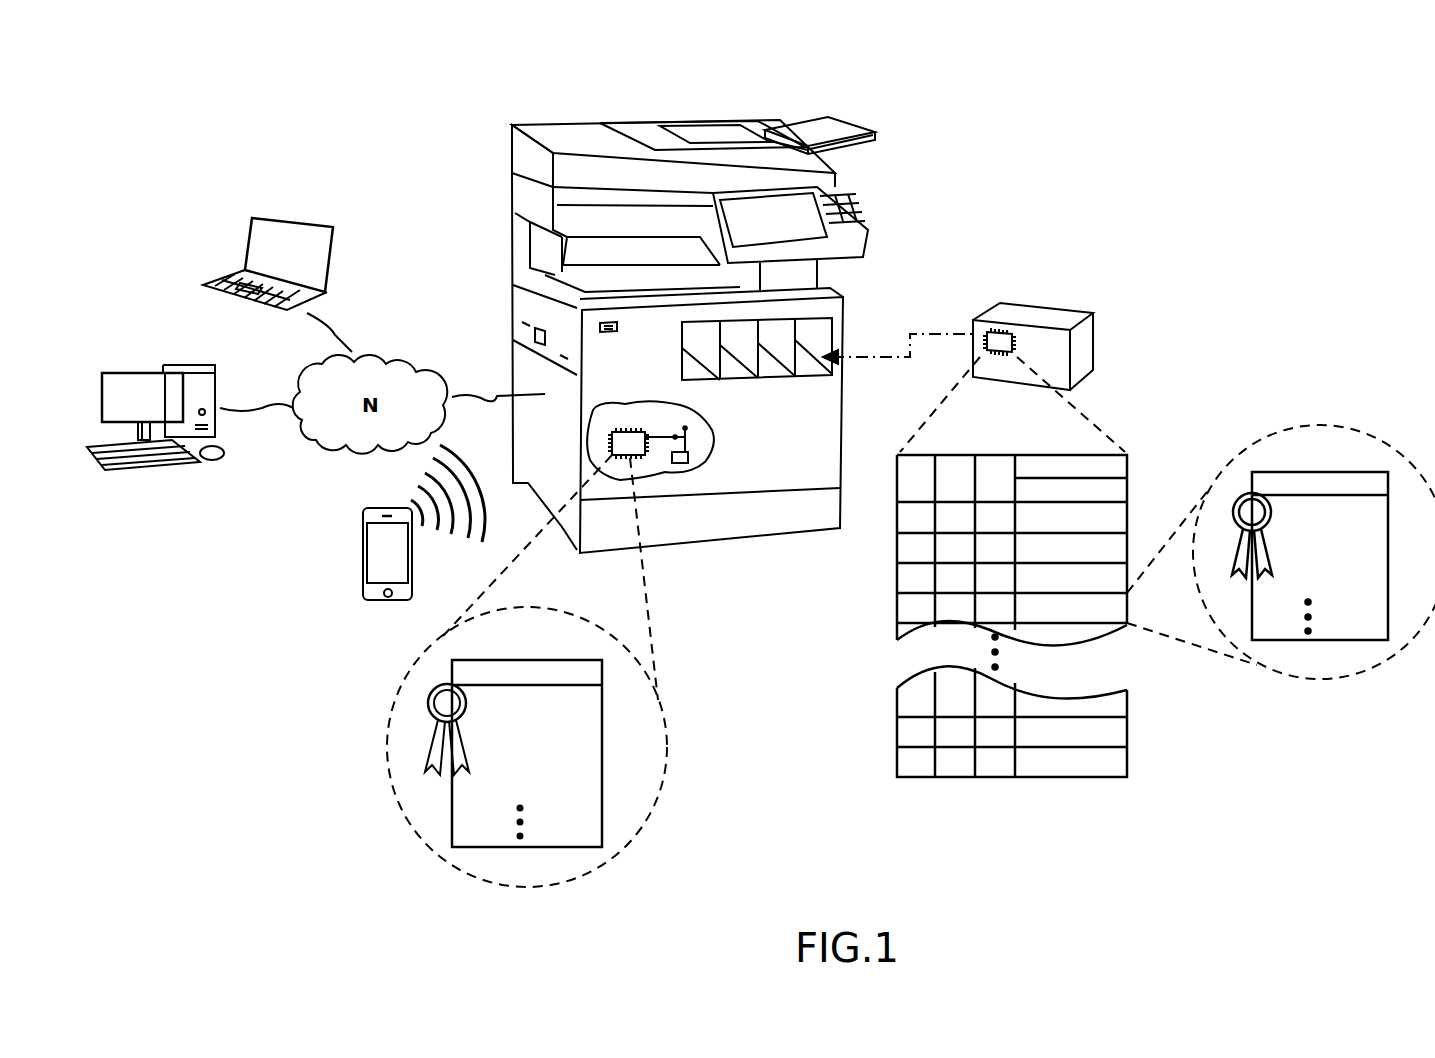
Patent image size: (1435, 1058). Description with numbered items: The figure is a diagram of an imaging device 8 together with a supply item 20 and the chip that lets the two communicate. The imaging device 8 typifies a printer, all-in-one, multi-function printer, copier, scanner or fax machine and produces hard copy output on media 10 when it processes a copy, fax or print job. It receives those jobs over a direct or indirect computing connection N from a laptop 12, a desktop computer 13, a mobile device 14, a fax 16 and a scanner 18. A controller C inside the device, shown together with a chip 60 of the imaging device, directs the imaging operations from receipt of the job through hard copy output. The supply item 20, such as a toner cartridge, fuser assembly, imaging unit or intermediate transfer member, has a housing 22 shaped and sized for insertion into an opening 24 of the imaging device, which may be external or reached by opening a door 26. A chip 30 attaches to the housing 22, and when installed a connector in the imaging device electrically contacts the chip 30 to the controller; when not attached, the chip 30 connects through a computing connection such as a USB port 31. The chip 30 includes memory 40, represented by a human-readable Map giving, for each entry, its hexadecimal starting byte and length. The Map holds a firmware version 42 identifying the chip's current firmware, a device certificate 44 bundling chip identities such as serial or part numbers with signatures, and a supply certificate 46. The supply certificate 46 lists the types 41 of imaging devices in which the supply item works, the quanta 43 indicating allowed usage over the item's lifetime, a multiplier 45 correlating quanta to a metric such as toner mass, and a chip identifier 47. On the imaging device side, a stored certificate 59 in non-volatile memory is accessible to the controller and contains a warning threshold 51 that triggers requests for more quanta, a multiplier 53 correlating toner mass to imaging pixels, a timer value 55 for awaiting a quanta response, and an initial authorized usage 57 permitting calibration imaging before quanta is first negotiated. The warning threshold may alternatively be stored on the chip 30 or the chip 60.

The imaging device 8 is at (532, 85).
The media 10 is at (820, 113).
The laptop 12 is at (282, 217).
The desktop computer 13 is at (177, 360).
The mobile device 14 is at (363, 548).
The fax 16 is at (850, 203).
The scanner 18 is at (510, 127).
The supply item 20 is at (1116, 344).
The housing 22 is at (1087, 313).
The opening 24 is at (808, 372).
The door 26 is at (513, 308).
The chip 30 is at (1013, 332).
The USB port 31 is at (613, 331).
The memory 40 is at (1128, 473).
The types of imaging devices 41 is at (1378, 562).
The firmware version 42 is at (1120, 762).
The quanta 43 is at (1347, 507).
The device certificate 44 is at (1128, 573).
The multiplier 45 is at (1353, 535).
The supply certificate 46 is at (1110, 620).
The chip identifier 47 is at (1347, 590).
The warning threshold 51 is at (592, 710).
The multiplier 53 is at (540, 738).
The timer value 55 is at (520, 763).
The initial authorized usage 57 is at (537, 792).
The stored certificate 59 is at (452, 817).
The chip 60 is at (687, 459).